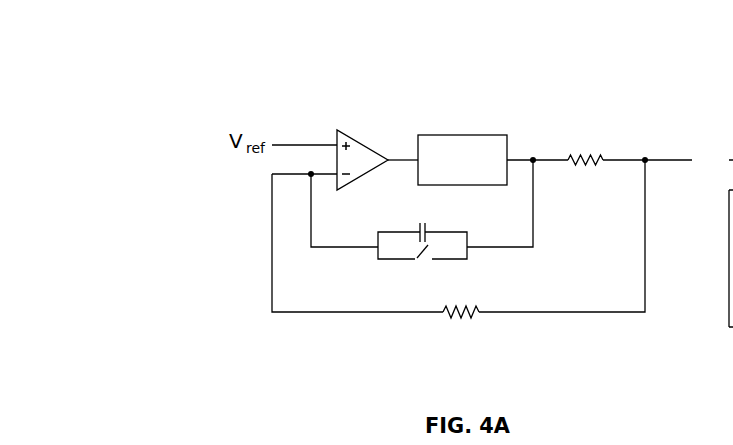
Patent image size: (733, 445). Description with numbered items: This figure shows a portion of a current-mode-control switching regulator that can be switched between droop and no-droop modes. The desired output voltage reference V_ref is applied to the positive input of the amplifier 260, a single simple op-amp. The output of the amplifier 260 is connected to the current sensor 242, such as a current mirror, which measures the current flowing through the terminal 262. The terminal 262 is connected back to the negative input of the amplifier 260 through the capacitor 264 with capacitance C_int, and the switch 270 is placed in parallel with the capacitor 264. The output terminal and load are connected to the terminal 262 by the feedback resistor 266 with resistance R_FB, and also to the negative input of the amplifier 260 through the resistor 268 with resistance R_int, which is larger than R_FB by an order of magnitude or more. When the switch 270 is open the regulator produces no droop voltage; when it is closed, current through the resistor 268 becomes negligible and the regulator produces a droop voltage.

The amplifier 260 is at (362, 142).
The current sensor 242 is at (462, 133).
The terminal 262 is at (535, 158).
The feedback resistor 266 is at (587, 166).
The capacitor 264 is at (418, 228).
The switch 270 is at (422, 254).
The resistor 268 is at (447, 314).